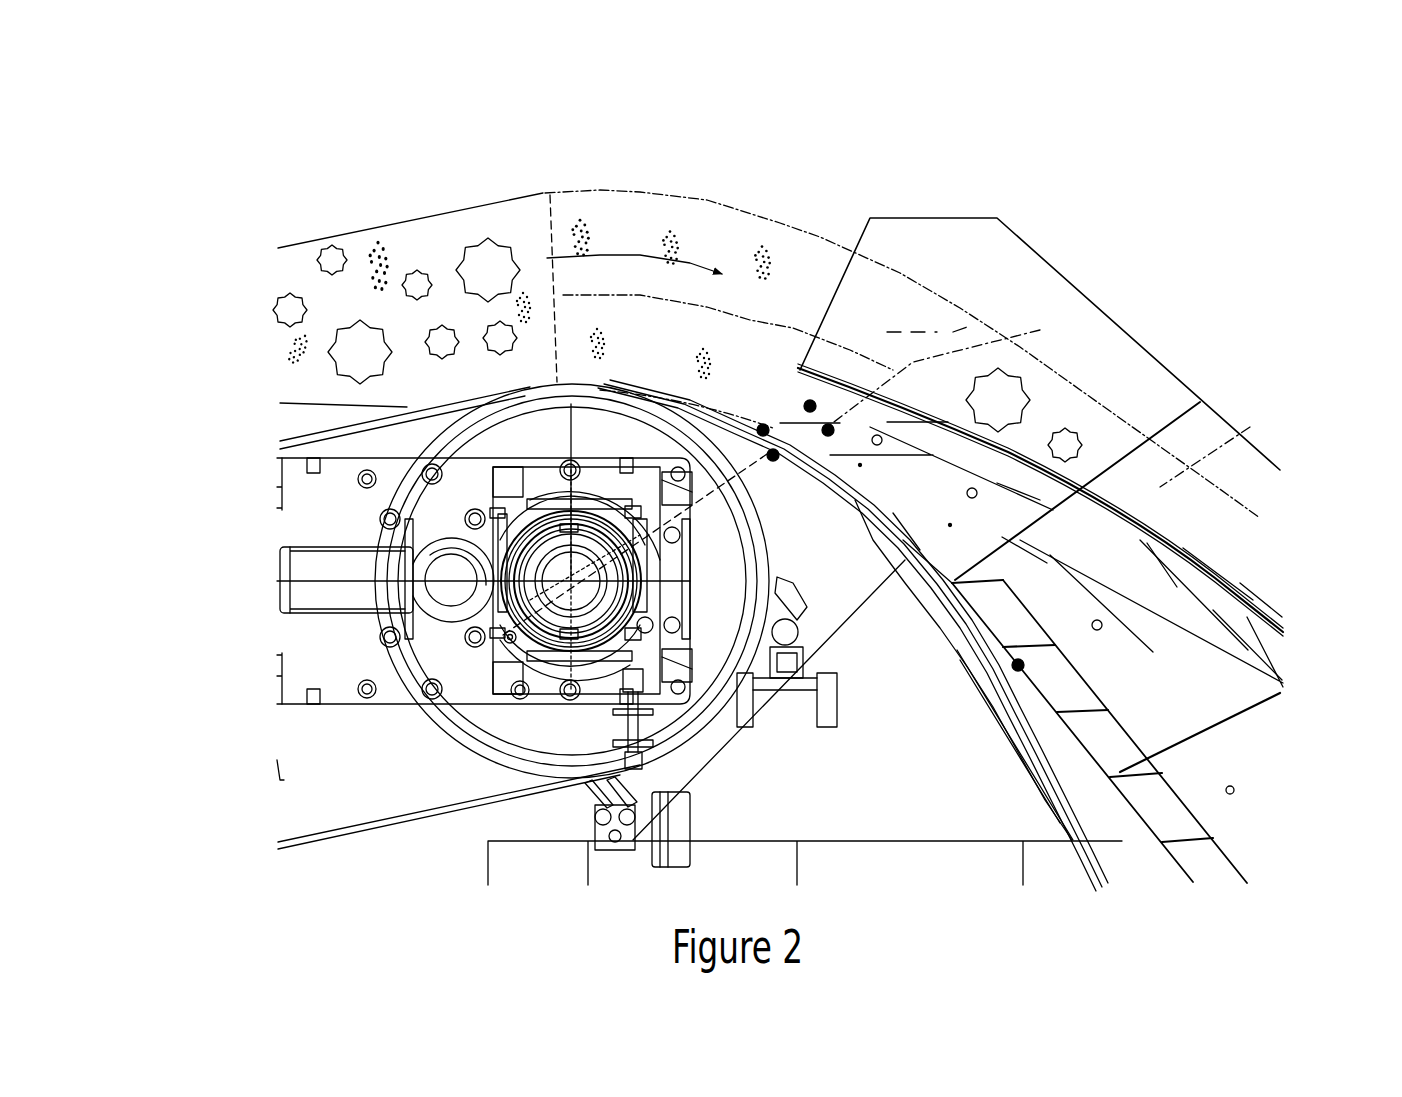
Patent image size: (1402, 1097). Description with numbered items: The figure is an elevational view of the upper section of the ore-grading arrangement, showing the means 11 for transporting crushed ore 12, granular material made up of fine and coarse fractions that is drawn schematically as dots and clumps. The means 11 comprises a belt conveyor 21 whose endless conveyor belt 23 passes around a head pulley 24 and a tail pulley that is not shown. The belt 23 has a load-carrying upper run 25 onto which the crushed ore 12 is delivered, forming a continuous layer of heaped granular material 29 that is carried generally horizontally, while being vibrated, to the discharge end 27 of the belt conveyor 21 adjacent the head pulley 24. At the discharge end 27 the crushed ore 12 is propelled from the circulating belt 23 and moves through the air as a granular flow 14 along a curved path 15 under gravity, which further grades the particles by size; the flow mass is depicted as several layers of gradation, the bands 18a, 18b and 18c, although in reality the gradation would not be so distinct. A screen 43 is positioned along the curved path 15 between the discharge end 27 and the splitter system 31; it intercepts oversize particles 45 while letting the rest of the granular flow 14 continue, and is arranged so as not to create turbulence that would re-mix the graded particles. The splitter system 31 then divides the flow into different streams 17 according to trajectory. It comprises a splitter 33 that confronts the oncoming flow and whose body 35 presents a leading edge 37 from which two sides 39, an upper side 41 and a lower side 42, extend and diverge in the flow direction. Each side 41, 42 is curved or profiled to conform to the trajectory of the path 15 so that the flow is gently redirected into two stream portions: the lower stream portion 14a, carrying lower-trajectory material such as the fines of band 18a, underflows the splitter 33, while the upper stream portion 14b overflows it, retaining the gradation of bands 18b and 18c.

The means for transporting granular material 11 is at (322, 157).
The crushed ore 12 is at (295, 258).
The continuous layer of heaped granular material 29 is at (443, 230).
The granular flow 14 is at (596, 206).
The discharge end 27 is at (608, 386).
The curved path 15 is at (690, 258).
The band 18a is at (740, 342).
The band 18b is at (745, 352).
The band 18c is at (795, 362).
The upper stream portion 14b is at (923, 303).
The streams 17 is at (967, 327).
The leading edge 37 is at (1040, 330).
The oversize particles 45 is at (1010, 402).
The screen 43 is at (1008, 452).
The sides 39 is at (1110, 490).
The splitter system 31 is at (1082, 537).
The upper side 41 is at (1215, 578).
The splitter 33 is at (1193, 640).
The body 35 is at (1143, 700).
The lower side 42 is at (1018, 665).
The upper run 25 is at (340, 398).
The belt conveyor 21 is at (287, 414).
The lower stream portion 14a is at (503, 635).
The endless conveyor belt 23 is at (312, 842).
The head pulley 24 is at (488, 758).